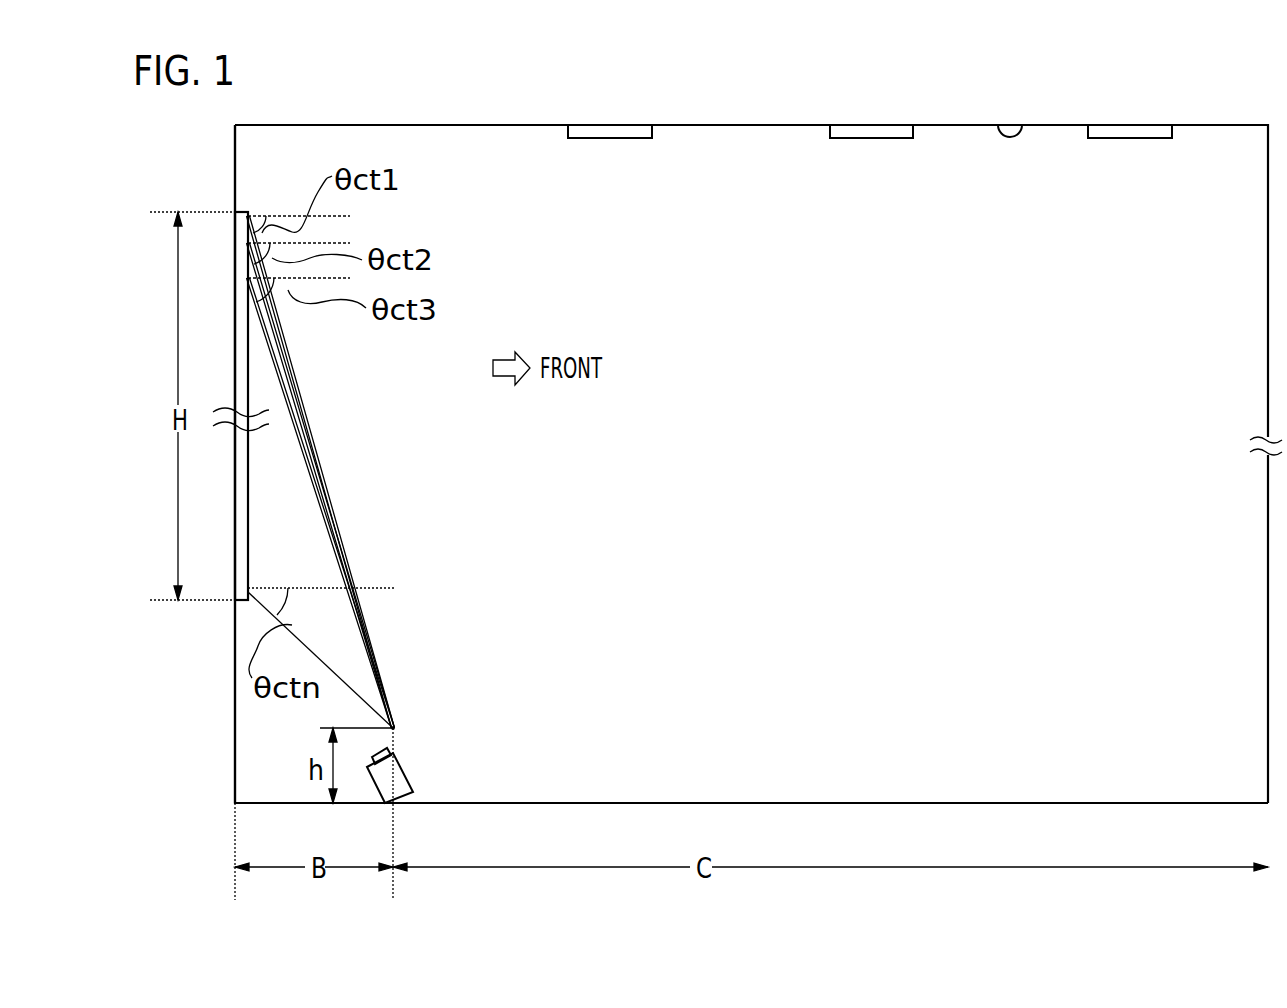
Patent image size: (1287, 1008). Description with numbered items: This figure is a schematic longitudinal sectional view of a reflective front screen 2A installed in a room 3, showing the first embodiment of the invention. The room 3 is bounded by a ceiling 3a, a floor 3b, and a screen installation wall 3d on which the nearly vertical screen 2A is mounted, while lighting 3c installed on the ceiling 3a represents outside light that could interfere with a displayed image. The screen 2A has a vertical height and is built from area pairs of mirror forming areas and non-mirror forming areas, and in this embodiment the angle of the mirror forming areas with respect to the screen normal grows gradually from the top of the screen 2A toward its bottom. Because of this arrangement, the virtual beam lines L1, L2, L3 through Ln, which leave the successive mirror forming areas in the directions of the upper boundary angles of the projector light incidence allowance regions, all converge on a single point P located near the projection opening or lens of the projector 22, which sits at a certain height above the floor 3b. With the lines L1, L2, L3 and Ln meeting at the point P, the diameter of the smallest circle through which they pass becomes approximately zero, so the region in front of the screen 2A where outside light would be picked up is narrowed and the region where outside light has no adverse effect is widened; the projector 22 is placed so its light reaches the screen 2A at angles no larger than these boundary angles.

The reflective front screen 2A is at (244, 211).
The room 3 is at (1213, 146).
The ceiling 3a is at (1014, 136).
The floor 3b is at (975, 803).
The lighting 3c is at (628, 132).
The screen installation wall 3d is at (236, 179).
The projector 22 is at (412, 780).
The point P is at (396, 724).
The line of virtual beam L1 is at (300, 398).
The line of virtual beam L2 is at (304, 436).
The line of virtual beam L3 is at (316, 492).
The line of virtual beam Ln is at (355, 690).